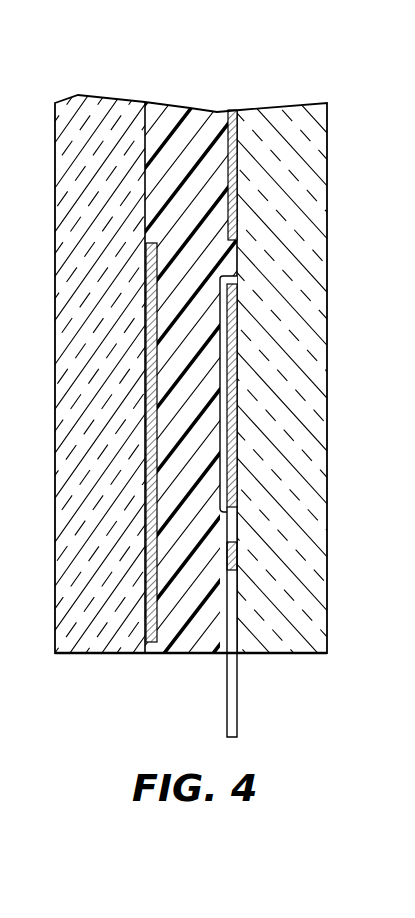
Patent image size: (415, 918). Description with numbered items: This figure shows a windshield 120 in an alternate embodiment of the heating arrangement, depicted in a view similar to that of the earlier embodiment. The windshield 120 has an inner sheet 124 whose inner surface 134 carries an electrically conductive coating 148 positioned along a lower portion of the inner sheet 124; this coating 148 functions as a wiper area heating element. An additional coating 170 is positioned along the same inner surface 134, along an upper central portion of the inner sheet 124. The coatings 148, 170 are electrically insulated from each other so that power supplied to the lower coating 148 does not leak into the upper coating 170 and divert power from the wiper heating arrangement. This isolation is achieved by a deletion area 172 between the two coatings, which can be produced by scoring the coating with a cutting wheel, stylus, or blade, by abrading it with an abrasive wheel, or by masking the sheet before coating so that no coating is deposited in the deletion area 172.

The windshield 120 is at (78, 683).
The inner sheet 124 is at (282, 108).
The inner surface 134 is at (233, 594).
The electrically conductive coating 148 is at (237, 428).
The additional coating 170 is at (237, 157).
The deletion area 172 is at (232, 261).